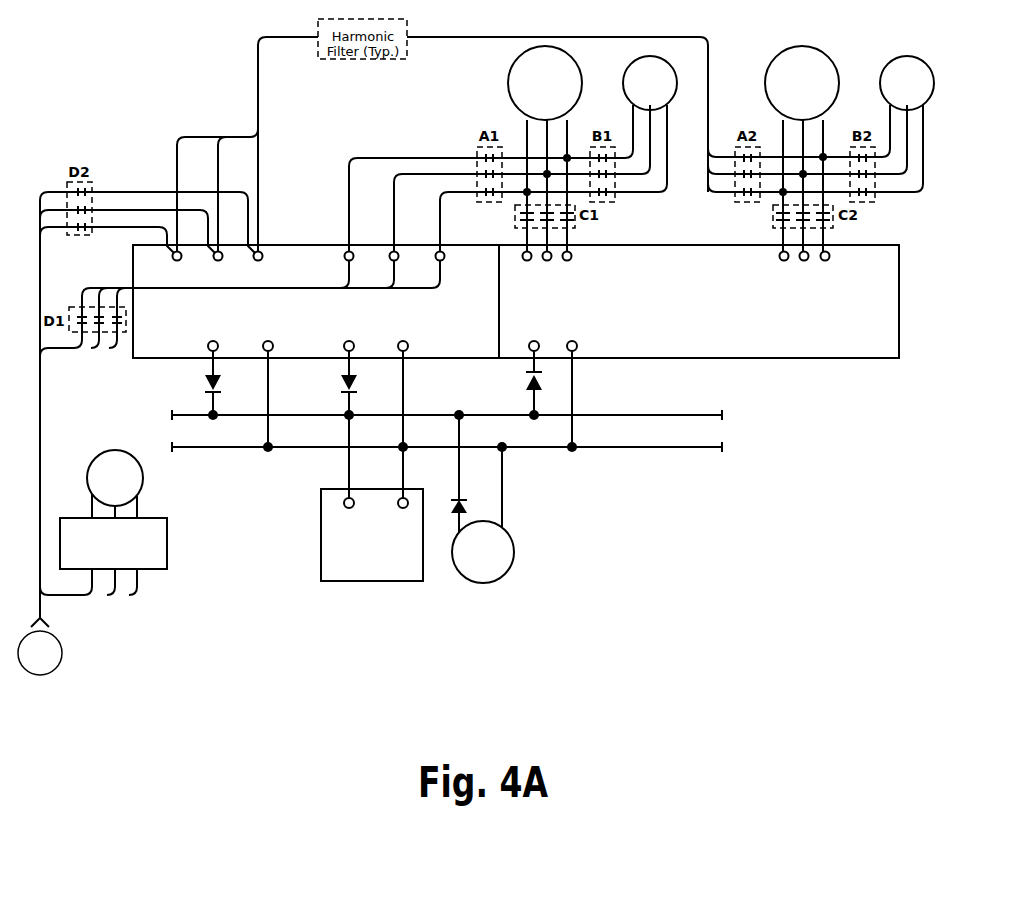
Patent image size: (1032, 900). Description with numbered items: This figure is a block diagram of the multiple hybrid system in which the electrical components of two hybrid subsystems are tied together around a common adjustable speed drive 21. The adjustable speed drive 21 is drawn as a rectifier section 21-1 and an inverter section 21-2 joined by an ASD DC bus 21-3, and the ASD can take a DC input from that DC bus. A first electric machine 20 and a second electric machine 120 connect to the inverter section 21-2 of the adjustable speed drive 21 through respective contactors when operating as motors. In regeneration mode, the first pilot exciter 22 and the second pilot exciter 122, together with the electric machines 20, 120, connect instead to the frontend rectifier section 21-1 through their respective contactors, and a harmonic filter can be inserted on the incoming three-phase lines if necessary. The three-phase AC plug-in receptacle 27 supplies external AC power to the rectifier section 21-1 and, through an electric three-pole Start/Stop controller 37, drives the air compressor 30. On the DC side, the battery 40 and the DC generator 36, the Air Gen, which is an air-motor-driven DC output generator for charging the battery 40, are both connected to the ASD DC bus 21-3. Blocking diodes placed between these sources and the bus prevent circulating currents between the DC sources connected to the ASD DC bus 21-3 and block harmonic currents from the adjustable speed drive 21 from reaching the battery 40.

The electric machine 20 is at (545, 83).
The pilot exciter 22 is at (650, 83).
The electric machine 120 is at (802, 83).
The pilot exciter 122 is at (907, 83).
The adjustable speed drive 21 is at (516, 286).
The rectifier section 21-1 is at (316, 301).
The inverter section 21-2 is at (699, 301).
The ASD DC bus 21-3 is at (447, 424).
The battery 40 is at (372, 535).
The DC generator 36 is at (482, 499).
The air compressor 30 is at (115, 484).
The controller 37 is at (103, 556).
The AC plug-in receptacle 27 is at (40, 653).